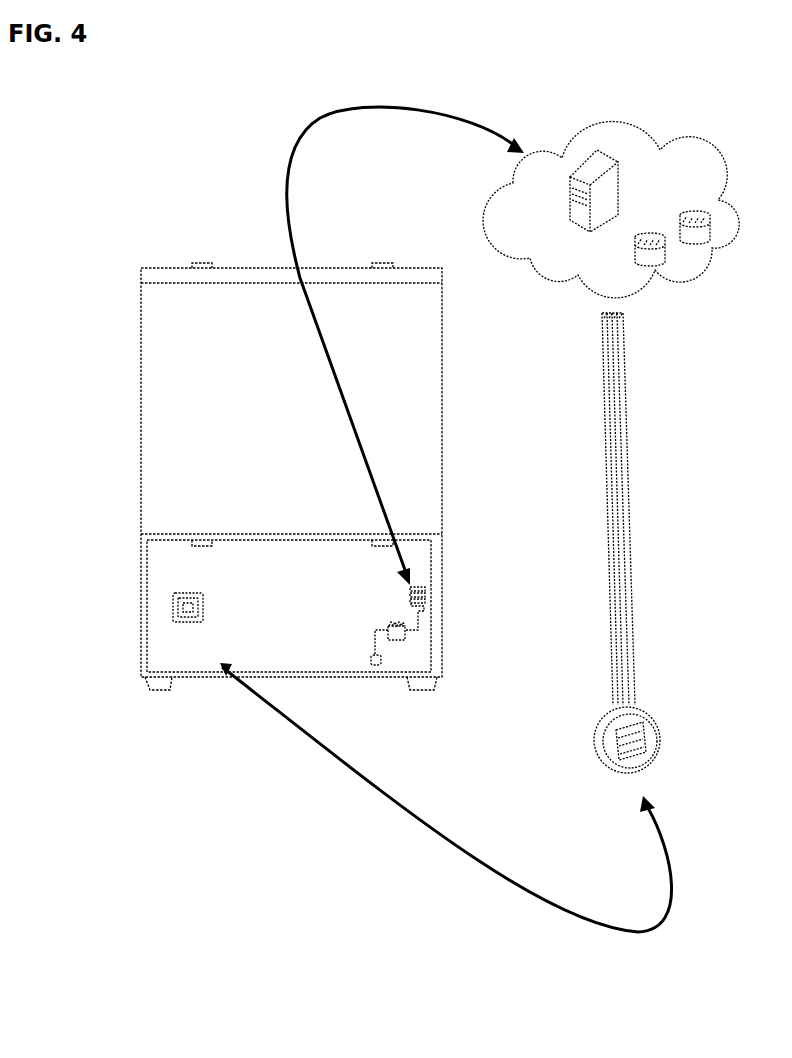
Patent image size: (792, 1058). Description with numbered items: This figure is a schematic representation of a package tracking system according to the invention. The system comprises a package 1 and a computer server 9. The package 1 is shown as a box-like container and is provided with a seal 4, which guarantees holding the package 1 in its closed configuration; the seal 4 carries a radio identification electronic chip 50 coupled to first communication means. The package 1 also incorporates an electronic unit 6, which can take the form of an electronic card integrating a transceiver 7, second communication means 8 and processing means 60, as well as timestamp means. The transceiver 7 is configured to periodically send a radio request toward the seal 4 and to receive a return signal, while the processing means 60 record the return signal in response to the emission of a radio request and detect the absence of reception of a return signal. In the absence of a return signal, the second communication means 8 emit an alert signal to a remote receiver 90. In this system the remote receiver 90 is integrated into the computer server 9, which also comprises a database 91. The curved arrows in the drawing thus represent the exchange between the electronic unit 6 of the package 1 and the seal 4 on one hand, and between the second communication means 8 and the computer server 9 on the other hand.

The package 1 is at (182, 713).
The seal 4 is at (650, 543).
The electronic unit 6 is at (428, 651).
The transceiver 7 is at (161, 609).
The second communication means 8 is at (424, 581).
The computer server 9 is at (622, 131).
The radio identification electronic chip 50 is at (618, 320).
The processing means 60 is at (396, 640).
The remote receiver 90 is at (590, 166).
The database 91 is at (645, 250).